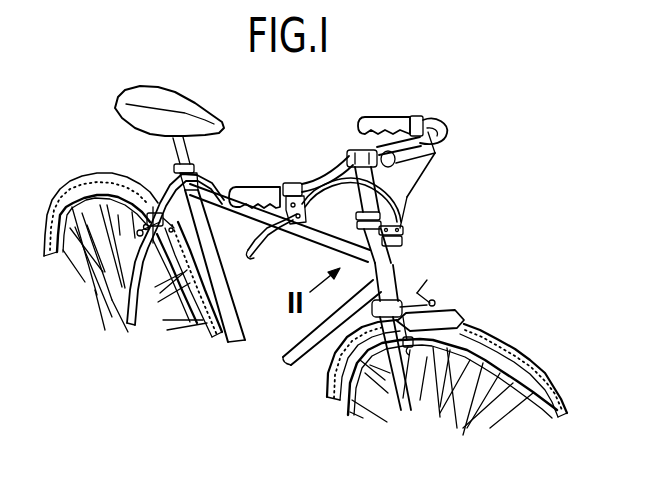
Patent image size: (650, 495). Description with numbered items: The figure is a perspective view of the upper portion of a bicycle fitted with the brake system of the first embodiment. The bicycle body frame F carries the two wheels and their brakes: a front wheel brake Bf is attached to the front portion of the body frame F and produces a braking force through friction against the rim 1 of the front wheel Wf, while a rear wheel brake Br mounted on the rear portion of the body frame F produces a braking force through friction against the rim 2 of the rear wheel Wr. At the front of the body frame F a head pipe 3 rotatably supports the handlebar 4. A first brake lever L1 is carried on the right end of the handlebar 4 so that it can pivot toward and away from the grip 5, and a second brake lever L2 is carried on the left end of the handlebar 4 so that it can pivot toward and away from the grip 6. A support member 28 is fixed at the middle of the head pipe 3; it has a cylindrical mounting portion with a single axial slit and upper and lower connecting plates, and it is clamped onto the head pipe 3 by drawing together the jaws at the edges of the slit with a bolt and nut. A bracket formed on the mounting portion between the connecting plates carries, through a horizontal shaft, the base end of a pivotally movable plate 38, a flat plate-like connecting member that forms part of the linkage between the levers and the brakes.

The rim 1 is at (542, 384).
The rim 2 is at (207, 320).
The head pipe 3 is at (385, 277).
The handlebar 4 is at (318, 180).
The grip 5 is at (258, 189).
The grip 6 is at (388, 116).
The support member 28 is at (358, 247).
The pivotally movable plate 38 is at (403, 243).
The bicycle body frame F is at (212, 186).
The rear wheel Wr is at (72, 200).
The front wheel Wf is at (516, 362).
The rear wheel brake Br is at (145, 195).
The front wheel brake Bf is at (442, 292).
The first brake lever L1 is at (252, 261).
The second brake lever L2 is at (413, 192).